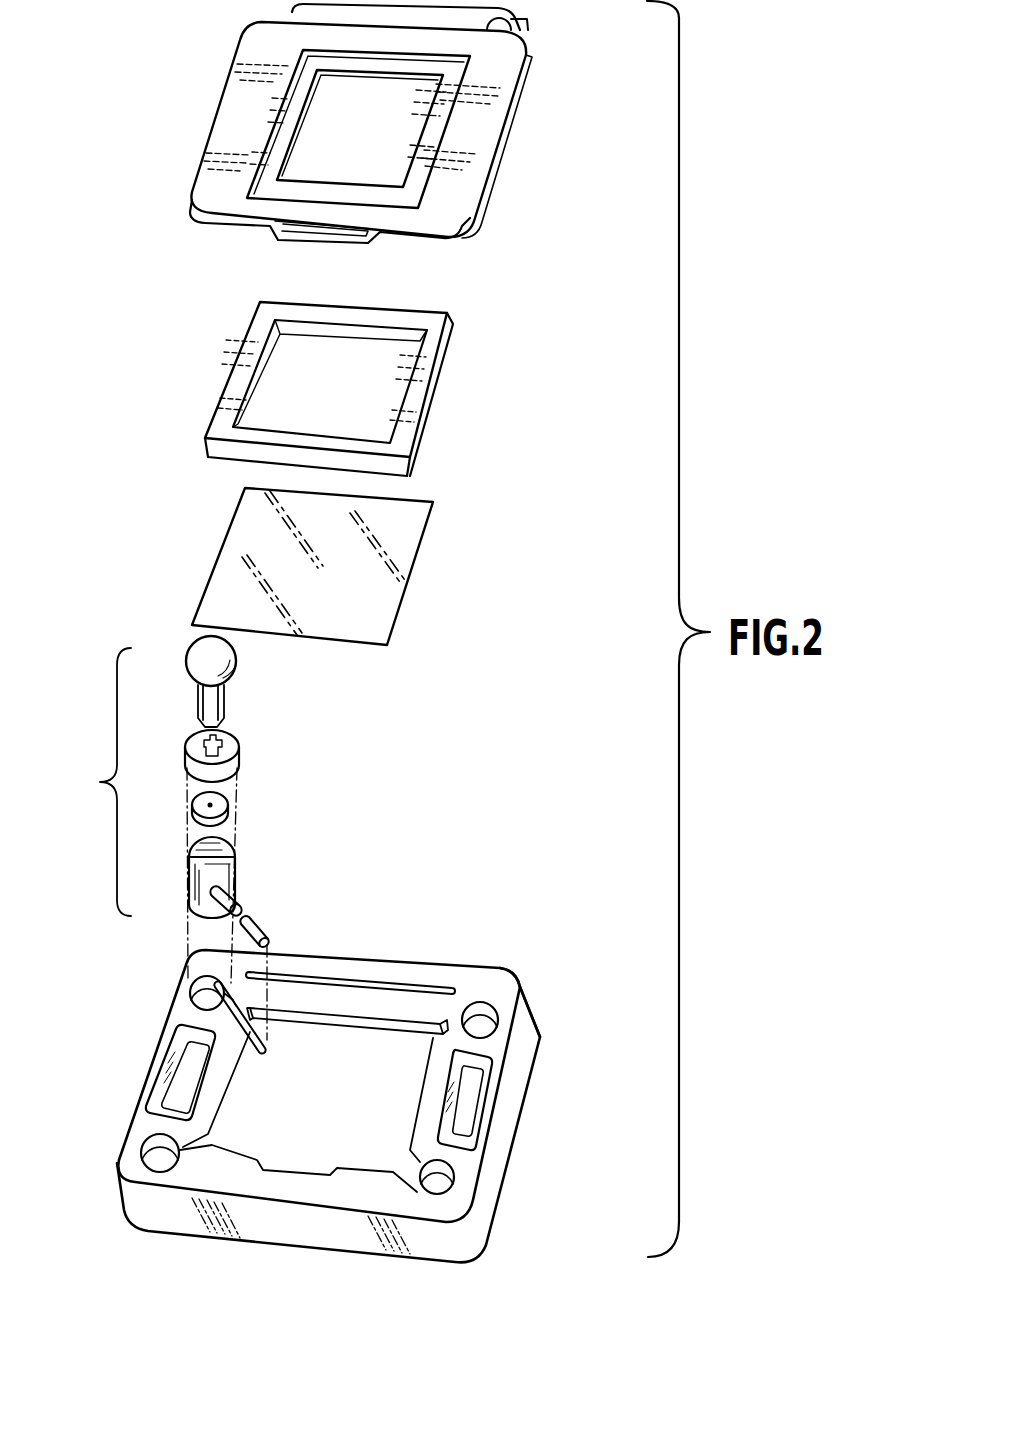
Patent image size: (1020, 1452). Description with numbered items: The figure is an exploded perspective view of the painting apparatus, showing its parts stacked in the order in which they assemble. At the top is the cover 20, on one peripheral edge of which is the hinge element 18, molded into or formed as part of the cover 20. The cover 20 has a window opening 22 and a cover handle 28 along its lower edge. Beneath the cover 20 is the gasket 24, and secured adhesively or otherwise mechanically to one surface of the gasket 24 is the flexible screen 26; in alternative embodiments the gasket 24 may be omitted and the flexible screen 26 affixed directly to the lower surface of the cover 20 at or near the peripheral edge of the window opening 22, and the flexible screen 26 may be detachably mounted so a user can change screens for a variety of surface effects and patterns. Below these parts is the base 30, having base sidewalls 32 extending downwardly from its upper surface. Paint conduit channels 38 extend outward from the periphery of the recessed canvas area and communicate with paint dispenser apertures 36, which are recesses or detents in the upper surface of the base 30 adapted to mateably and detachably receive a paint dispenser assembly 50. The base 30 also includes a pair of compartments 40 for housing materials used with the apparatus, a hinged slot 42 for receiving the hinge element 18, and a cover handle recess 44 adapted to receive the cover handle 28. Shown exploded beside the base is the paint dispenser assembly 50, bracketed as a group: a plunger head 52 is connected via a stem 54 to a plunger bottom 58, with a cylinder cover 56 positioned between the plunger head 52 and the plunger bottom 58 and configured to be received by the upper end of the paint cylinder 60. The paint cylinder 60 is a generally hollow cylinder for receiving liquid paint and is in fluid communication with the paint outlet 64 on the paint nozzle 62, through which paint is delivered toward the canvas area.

The hinge element 18 is at (518, 10).
The cover 20 is at (503, 139).
The window opening 22 is at (270, 143).
The gasket 24 is at (452, 350).
The flexible screen 26 is at (447, 510).
The cover handle 28 is at (373, 243).
The base 30 is at (533, 1118).
The base sidewalls 32 is at (528, 1037).
The paint dispenser apertures 36 is at (521, 987).
The paint conduit channels 38 is at (482, 1012).
The compartments 40 is at (162, 1073).
The hinged slot 42 is at (377, 978).
The cover handle recess 44 is at (280, 1177).
The paint dispenser assembly 50 is at (201, 838).
The plunger head 52 is at (238, 662).
The stem 54 is at (240, 685).
The cylinder cover 56 is at (243, 738).
The plunger bottom 58 is at (247, 813).
The paint cylinder 60 is at (242, 857).
The paint nozzle 62 is at (241, 908).
The paint outlet 64 is at (269, 931).